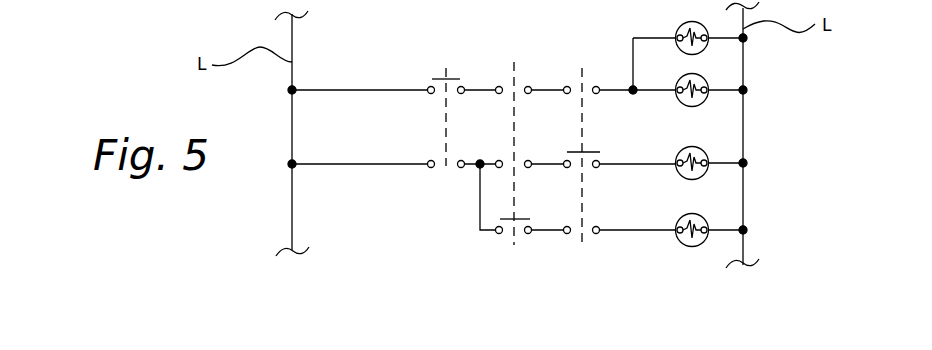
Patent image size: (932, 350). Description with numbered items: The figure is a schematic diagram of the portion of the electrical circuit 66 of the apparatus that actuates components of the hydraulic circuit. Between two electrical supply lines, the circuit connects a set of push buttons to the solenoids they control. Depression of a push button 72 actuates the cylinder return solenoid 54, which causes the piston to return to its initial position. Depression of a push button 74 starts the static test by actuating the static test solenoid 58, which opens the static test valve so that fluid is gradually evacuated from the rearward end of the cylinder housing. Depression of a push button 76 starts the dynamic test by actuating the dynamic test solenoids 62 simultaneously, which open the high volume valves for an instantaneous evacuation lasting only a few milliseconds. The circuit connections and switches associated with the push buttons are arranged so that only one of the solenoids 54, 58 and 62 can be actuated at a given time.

The cylinder return solenoid 54 is at (703, 150).
The static test solenoid 58 is at (703, 216).
The dynamic test solenoids 62 is at (700, 52).
The electrical circuit 66 is at (832, 79).
The push button 72 is at (583, 197).
The push button 74 is at (514, 189).
The push button 76 is at (446, 131).